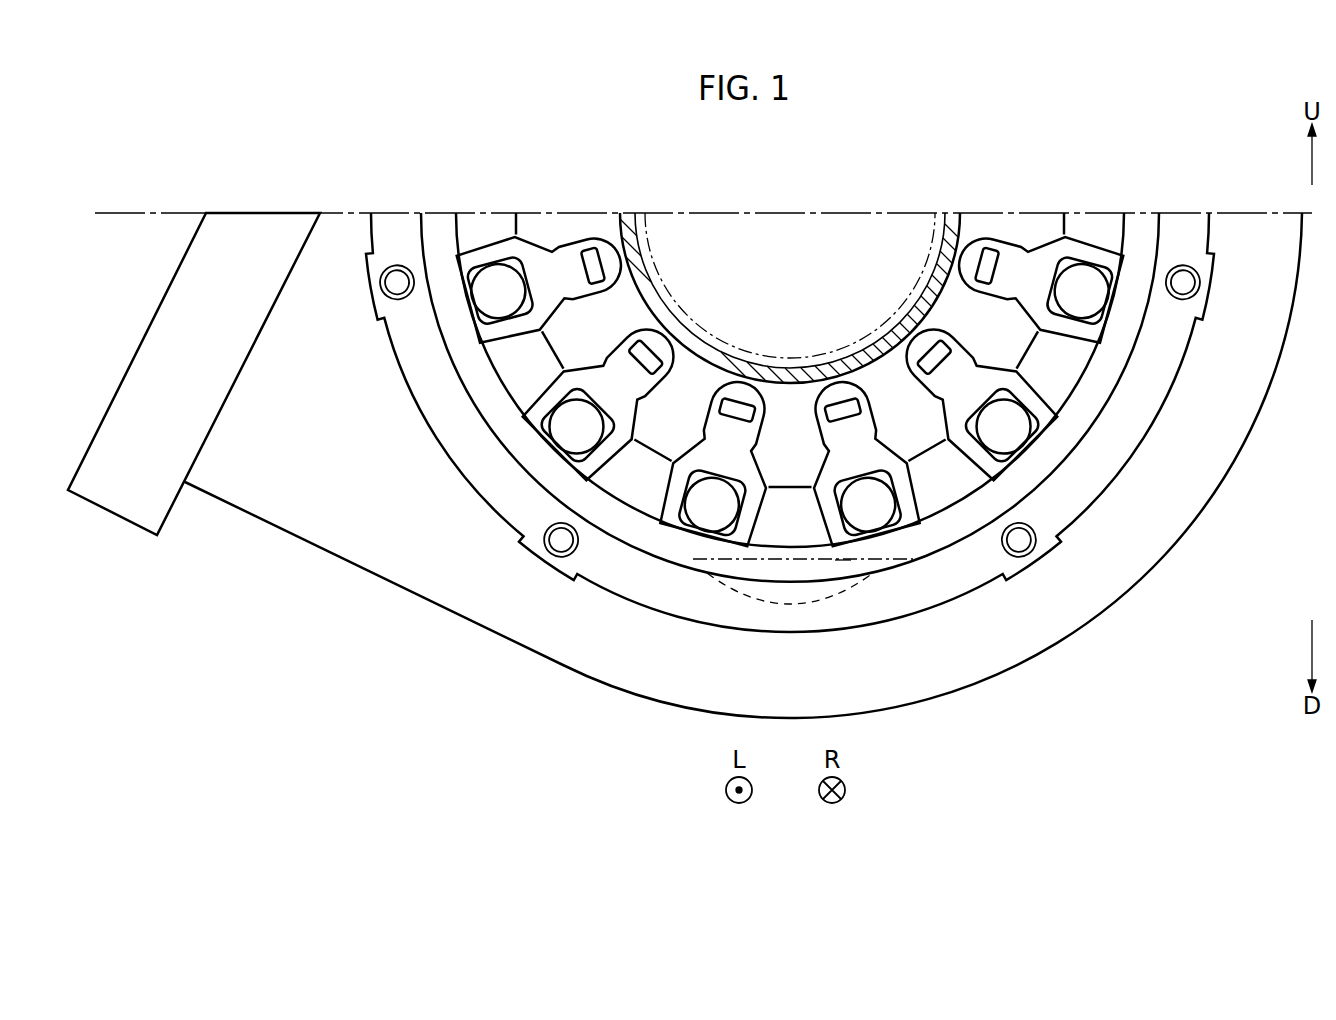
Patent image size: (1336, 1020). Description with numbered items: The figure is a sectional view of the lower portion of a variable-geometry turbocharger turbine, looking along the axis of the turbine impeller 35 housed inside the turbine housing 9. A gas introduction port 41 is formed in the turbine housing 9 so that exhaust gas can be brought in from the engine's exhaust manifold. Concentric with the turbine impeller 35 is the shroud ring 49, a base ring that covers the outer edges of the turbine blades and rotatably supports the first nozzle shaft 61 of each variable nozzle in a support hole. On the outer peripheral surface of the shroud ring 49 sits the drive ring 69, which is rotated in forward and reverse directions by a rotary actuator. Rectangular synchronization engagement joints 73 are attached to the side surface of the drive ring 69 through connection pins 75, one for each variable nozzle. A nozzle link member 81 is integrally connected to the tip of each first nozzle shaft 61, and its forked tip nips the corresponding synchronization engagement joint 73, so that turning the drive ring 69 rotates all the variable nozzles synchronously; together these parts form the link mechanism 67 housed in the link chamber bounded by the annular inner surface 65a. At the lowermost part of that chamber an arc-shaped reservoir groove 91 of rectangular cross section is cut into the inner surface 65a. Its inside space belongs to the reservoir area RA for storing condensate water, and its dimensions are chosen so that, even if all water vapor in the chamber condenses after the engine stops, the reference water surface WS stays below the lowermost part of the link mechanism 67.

The turbine housing 9 is at (1081, 626).
The gas introduction port 41 is at (160, 318).
The drive ring 69 is at (1068, 362).
The inner surface of the link chamber 65a is at (622, 522).
The link mechanism 67 is at (497, 382).
The shroud ring 49 is at (997, 332).
The turbine impeller 35 is at (878, 362).
The nozzle link member 81 is at (533, 412).
The first nozzle shaft 61 is at (653, 349).
The synchronization engagement joint 73 is at (550, 452).
The connection pin 75 is at (570, 440).
The reservoir groove 91 is at (783, 605).
The reference water surface WS is at (788, 553).
The reservoir area RA is at (843, 565).